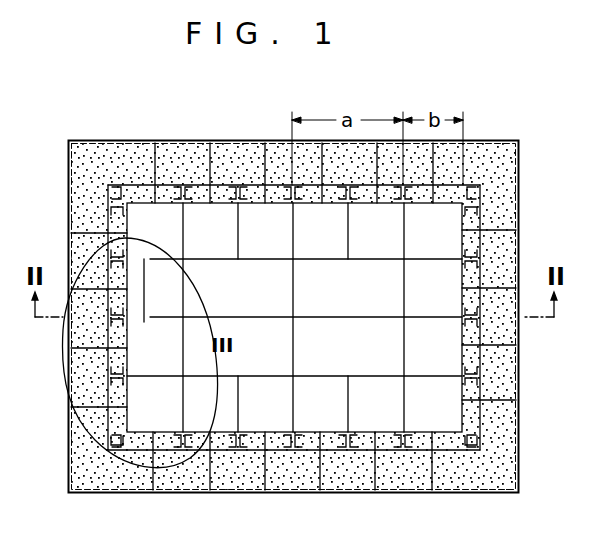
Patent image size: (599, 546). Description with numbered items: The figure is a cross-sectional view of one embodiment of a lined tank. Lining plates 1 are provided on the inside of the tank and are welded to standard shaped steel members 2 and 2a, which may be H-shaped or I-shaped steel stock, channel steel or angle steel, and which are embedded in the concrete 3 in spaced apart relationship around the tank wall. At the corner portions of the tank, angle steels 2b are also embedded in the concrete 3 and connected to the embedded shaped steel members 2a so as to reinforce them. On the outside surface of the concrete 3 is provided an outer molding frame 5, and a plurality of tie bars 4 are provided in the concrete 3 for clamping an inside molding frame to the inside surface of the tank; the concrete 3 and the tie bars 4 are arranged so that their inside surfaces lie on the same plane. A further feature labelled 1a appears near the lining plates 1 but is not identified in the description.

The lining plate 1 is at (128, 412).
The panel joint 1a is at (145, 306).
The shaped steel member 2 is at (243, 431).
The shaped steel member 2a is at (296, 431).
The angle steel 2b is at (464, 431).
The concrete 3 is at (82, 465).
The tie bar 4 is at (212, 474).
The outer molding frame 5 is at (133, 494).